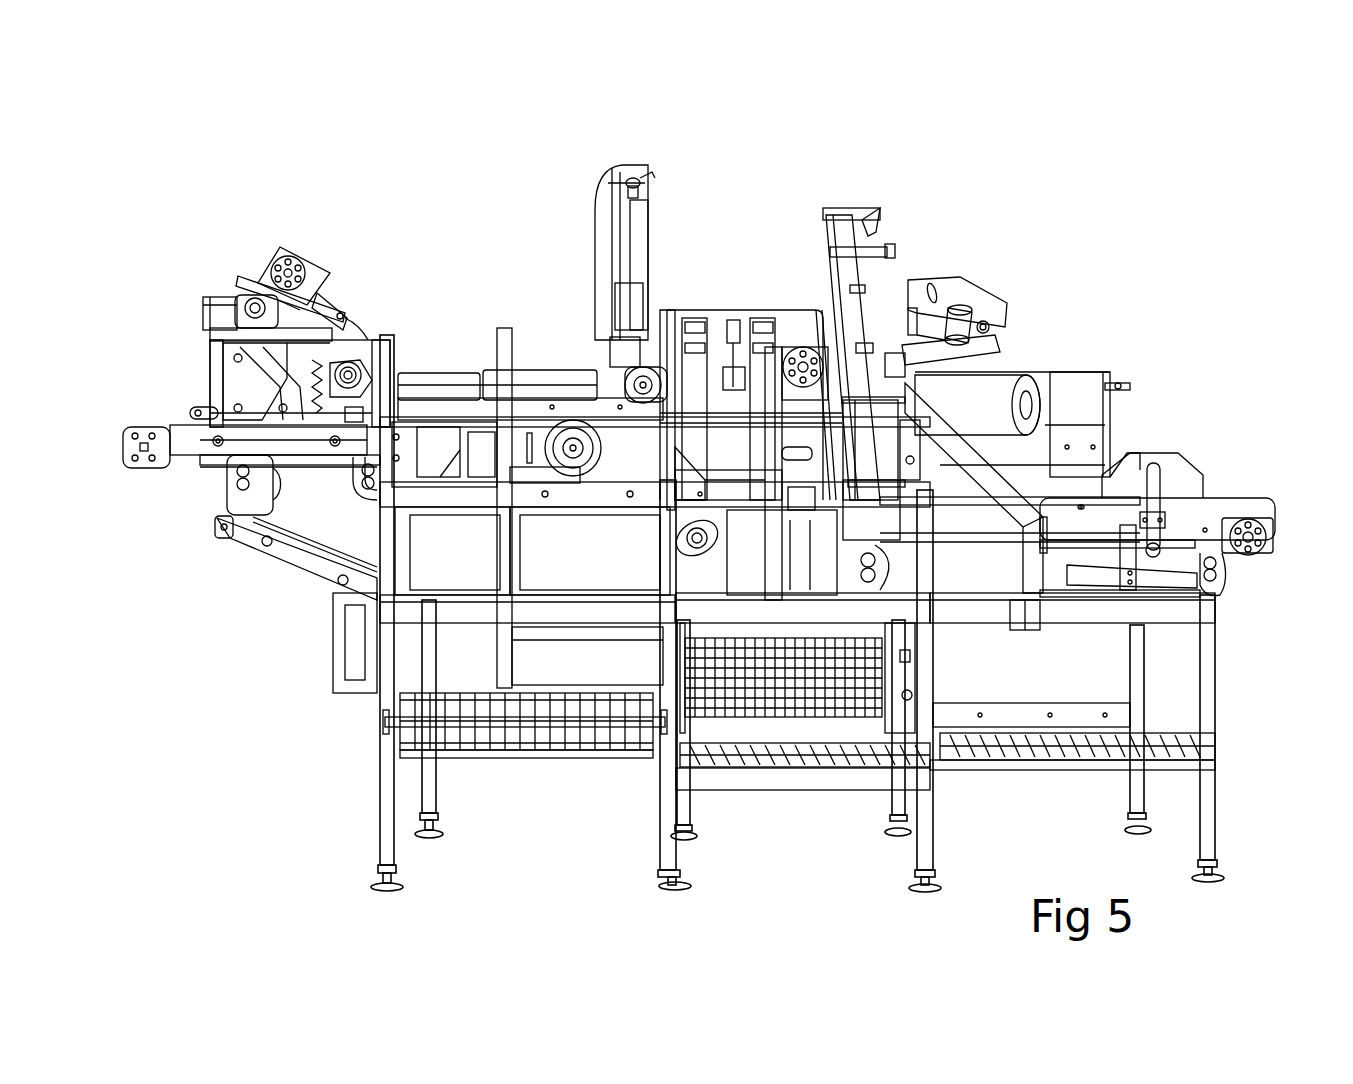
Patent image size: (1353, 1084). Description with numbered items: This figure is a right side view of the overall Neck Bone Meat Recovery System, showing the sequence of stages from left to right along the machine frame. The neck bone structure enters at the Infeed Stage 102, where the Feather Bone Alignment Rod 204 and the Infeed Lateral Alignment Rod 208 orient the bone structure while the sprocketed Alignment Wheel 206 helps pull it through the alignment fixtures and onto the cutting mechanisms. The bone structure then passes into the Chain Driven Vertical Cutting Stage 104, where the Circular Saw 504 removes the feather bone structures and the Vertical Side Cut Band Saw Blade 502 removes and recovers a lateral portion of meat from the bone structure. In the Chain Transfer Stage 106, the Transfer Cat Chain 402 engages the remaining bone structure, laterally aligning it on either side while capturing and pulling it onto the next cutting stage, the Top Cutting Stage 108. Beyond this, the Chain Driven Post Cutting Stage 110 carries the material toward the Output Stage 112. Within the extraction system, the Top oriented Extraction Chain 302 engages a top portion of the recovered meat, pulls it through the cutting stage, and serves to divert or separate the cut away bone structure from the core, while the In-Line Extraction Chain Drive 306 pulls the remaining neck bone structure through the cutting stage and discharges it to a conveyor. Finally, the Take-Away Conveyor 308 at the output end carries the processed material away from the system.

The Infeed Stage 102 is at (193, 258).
The Chain Driven Vertical Cutting Stage 104 is at (582, 172).
The Chain Transfer Stage 106 is at (736, 202).
The Top Cutting Stage 108 is at (852, 198).
The Chain Driven Post Cutting Stage 110 is at (1003, 262).
The Output Stage 112 is at (1244, 442).
The Feather Bone Alignment Rod 204 is at (205, 412).
The sprocketed Alignment Wheel 206 is at (363, 342).
The Infeed Lateral Alignment Rod 208 is at (148, 425).
The Top oriented Extraction Chain 302 is at (975, 360).
The In-Line Extraction Chain Drive 306 is at (1032, 405).
The Take-Away Conveyor 308 is at (1250, 497).
The Transfer Cat Chain 402 is at (612, 368).
The Vertical Side Cut Band Saw Blade 502 is at (612, 375).
The Circular Saw 504 is at (572, 440).